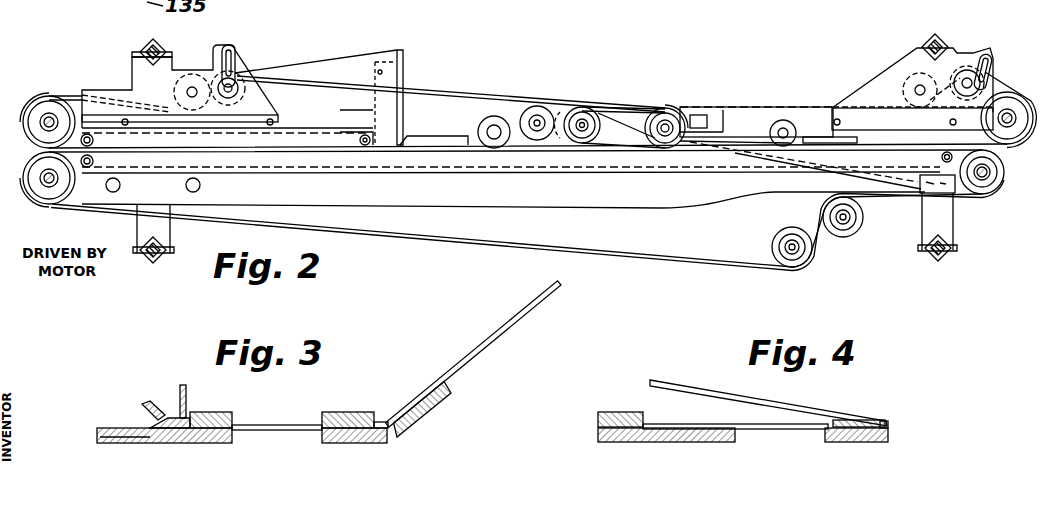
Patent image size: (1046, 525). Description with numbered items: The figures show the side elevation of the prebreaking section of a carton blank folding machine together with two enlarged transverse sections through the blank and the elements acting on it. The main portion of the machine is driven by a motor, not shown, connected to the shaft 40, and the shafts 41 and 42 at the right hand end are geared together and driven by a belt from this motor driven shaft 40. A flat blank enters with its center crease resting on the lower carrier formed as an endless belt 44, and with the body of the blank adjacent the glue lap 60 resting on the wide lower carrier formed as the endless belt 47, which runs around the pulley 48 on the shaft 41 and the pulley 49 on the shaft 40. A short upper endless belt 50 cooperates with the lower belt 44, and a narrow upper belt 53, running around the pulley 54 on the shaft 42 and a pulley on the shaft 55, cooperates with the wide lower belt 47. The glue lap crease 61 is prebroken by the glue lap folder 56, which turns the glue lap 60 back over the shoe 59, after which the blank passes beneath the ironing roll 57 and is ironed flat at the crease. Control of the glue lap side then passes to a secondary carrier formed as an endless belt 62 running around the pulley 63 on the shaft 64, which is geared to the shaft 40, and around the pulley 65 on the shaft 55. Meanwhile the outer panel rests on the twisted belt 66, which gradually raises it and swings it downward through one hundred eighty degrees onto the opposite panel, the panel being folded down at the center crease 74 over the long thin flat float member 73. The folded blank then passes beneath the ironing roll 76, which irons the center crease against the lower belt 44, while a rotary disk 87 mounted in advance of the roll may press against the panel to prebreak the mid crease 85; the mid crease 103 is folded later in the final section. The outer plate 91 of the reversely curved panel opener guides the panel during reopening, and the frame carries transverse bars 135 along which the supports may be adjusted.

In FIG. 2, the motor driven shaft 40 is at (45, 182).
In FIG. 2, the shaft 41 is at (985, 178).
In FIG. 2, the shaft 42 is at (1009, 112).
In FIG. 3, the endless belt 44 is at (352, 444).
In FIG. 4, the endless belt 44 is at (853, 443).
In FIG. 2, the endless belt 47 is at (740, 268).
In FIG. 3, the endless belt 47 is at (168, 444).
In FIG. 4, the endless belt 47 is at (668, 443).
In FIG. 2, the pulley 48 is at (995, 188).
In FIG. 2, the pulley 49 is at (60, 196).
In FIG. 3, the endless belt 50 is at (342, 412).
In FIG. 2, the belt 53 is at (742, 107).
In FIG. 3, the belt 53 is at (215, 412).
In FIG. 2, the pulley 54 is at (1011, 140).
In FIG. 2, the shaft 55 is at (665, 120).
In FIG. 2, the glue lap folder 56 is at (823, 140).
In FIG. 3, the glue lap folder 56 is at (150, 404).
In FIG. 2, the ironing roll 57 is at (786, 122).
In FIG. 3, the shoe 59 is at (183, 396).
In FIG. 3, the glue lap 60 is at (168, 417).
In FIG. 3, the glue lap crease 61 is at (130, 437).
In FIG. 2, the endless belt 62 is at (468, 92).
In FIG. 4, the endless belt 62 is at (640, 412).
In FIG. 2, the pulley 63 is at (46, 118).
In FIG. 2, the shaft 64 is at (22, 100).
In FIG. 2, the pulley 65 is at (693, 100).
In FIG. 2, the twisted belt 66 is at (620, 112).
In FIG. 3, the twisted belt 66 is at (432, 414).
In FIG. 4, the float member 73 is at (858, 420).
In FIG. 3, the center crease 74 is at (383, 422).
In FIG. 4, the center crease 74 is at (890, 428).
In FIG. 2, the ironing roll 76 is at (498, 116).
In FIG. 3, the mid crease 85 is at (445, 375).
In FIG. 4, the mid crease 85 is at (800, 404).
In FIG. 2, the rotary disk 87 is at (540, 108).
In FIG. 2, the outer plate 91 is at (380, 50).
In FIG. 3, the mid crease 103 is at (235, 432).
In FIG. 4, the mid crease 103 is at (736, 432).
In FIG. 2, the transverse bars 135 is at (142, 48).